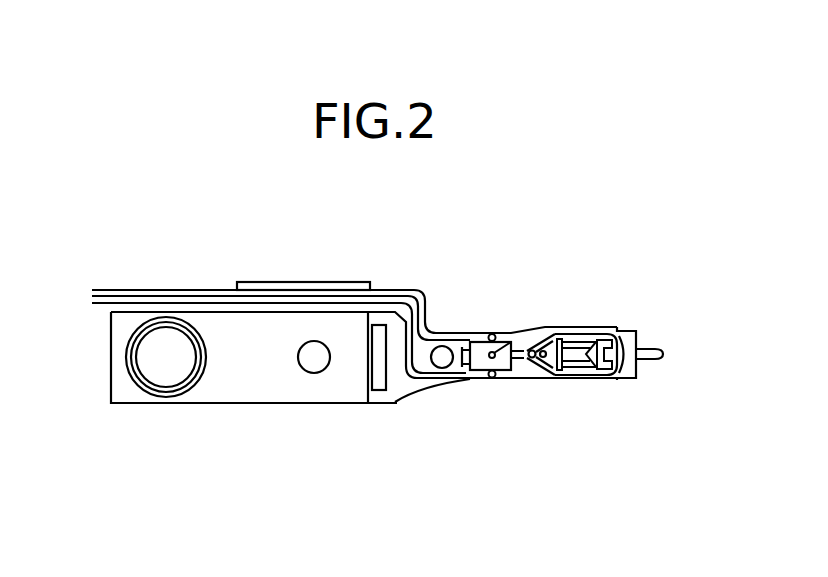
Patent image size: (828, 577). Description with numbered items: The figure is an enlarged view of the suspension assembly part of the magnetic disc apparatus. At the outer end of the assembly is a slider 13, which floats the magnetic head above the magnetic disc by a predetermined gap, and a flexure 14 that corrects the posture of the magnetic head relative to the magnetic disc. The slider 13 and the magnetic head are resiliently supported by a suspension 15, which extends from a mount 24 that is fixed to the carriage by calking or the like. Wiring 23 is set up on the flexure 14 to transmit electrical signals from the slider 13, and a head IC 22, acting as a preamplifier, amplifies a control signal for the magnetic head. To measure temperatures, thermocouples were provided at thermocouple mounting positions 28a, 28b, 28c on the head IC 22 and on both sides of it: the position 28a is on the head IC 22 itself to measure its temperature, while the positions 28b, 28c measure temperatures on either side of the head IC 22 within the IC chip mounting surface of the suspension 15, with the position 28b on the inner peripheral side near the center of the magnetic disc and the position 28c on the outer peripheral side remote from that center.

The slider 13 is at (572, 381).
The flexure 14 is at (535, 381).
The suspension 15 is at (395, 380).
The head IC 22 is at (473, 381).
The wiring 23 is at (582, 330).
The mount 24 is at (217, 386).
The thermocouple mounting position 28a is at (508, 332).
The thermocouple mounting position 28b is at (488, 333).
The thermocouple mounting position 28c is at (491, 378).